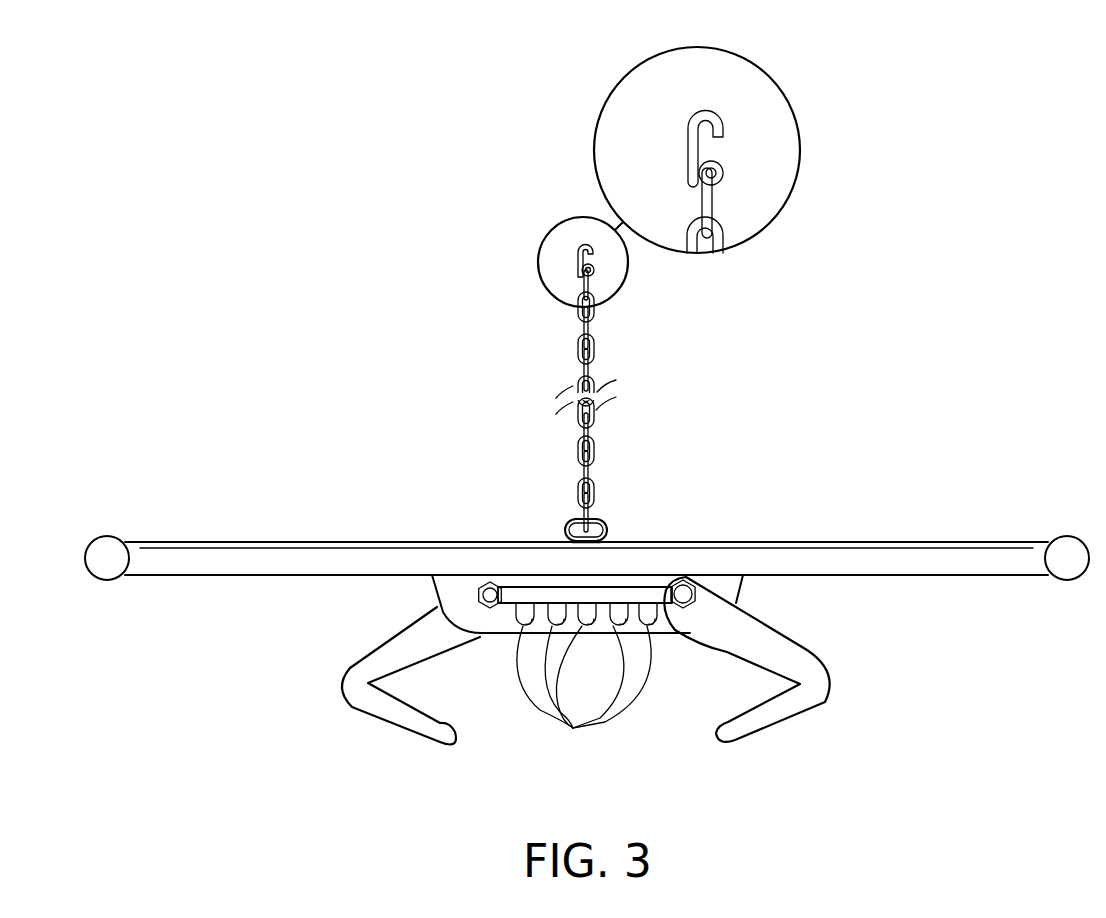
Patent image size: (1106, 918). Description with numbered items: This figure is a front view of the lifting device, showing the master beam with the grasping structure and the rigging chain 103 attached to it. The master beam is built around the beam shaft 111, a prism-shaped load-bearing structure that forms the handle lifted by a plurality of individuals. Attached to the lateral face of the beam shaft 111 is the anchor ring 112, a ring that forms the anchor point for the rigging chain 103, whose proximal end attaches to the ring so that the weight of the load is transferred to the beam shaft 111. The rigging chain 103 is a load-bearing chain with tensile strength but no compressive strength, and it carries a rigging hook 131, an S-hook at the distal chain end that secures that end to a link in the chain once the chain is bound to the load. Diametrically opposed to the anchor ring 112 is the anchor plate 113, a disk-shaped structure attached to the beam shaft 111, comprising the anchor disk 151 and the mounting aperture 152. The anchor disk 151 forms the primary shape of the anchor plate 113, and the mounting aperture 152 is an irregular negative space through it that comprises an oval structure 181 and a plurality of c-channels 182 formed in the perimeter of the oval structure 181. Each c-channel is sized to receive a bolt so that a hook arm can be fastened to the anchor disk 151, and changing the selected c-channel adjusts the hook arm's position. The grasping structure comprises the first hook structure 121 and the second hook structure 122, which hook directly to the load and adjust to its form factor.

The rigging chain 103 is at (718, 232).
The beam shaft 111 is at (895, 542).
The anchor ring 112 is at (607, 524).
The anchor plate 113 is at (458, 587).
The first hook structure 121 is at (382, 725).
The second hook structure 122 is at (775, 732).
The rigging hook 131 is at (723, 118).
The anchor disk 151 is at (430, 590).
The mounting aperture 152 is at (648, 587).
The oval structure 181 is at (603, 603).
The plurality of c-channels 182 is at (584, 699).